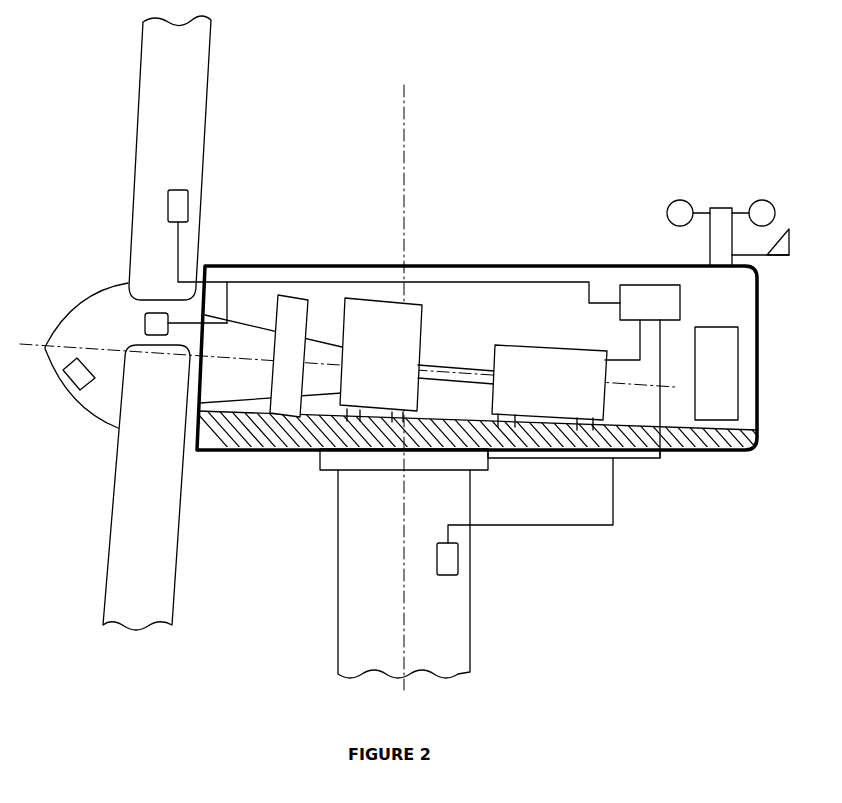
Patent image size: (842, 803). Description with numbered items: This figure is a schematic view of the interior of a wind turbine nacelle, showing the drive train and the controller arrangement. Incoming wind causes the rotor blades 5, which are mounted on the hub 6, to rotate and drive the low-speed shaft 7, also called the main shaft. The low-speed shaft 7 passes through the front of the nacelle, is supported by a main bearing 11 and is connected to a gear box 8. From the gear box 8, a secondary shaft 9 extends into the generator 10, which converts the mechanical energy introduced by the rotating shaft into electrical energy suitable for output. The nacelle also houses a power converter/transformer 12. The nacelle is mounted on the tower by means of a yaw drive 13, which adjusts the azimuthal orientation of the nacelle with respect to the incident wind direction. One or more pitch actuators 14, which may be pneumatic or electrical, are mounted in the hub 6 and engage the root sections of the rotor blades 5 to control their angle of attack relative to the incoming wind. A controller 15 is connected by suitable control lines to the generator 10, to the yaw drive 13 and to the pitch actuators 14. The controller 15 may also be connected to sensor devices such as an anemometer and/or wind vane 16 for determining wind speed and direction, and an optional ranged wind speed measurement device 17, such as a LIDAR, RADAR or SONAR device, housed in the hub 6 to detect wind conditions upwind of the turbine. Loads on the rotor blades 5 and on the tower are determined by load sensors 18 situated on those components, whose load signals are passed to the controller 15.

The rotor blade 5 is at (138, 118).
The hub 6 is at (92, 302).
The low-speed shaft 7 is at (250, 322).
The gear box 8 is at (374, 298).
The secondary shaft 9 is at (456, 365).
The generator 10 is at (517, 346).
The main bearing 11 is at (296, 295).
The power converter/transformer 12 is at (740, 342).
The yaw drive 13 is at (488, 471).
The pitch actuator 14 is at (145, 324).
The controller 15 is at (643, 285).
The anemometer and/or wind vane 16 is at (722, 208).
The ranged wind speed measurement device 17 is at (70, 380).
The load sensor 18 is at (188, 206).